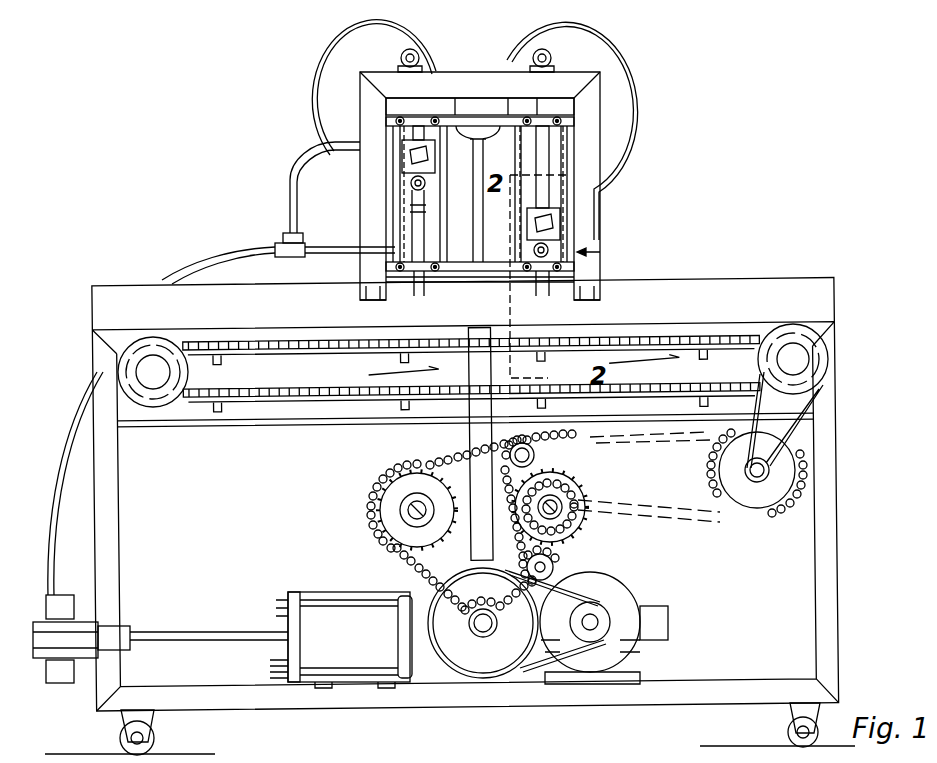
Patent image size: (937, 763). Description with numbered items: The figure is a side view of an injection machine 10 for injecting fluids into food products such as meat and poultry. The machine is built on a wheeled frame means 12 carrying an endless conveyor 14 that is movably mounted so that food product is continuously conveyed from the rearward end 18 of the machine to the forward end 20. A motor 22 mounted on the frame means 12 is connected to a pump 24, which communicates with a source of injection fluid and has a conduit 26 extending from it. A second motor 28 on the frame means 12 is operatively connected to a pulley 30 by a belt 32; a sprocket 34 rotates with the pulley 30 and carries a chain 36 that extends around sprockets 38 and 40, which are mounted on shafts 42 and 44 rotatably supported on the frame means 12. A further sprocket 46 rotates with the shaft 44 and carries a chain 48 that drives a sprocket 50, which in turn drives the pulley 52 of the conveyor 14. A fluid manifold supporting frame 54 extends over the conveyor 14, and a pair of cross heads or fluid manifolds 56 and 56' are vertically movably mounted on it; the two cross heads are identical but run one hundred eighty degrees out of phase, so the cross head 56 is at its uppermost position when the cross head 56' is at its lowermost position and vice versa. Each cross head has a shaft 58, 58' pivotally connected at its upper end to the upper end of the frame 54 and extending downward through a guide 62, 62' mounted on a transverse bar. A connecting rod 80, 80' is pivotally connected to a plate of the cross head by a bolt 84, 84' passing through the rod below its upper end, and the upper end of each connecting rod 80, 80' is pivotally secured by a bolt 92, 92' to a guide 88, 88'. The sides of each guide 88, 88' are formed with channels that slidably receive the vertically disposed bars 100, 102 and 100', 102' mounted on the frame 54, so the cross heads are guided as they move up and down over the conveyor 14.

The injection machine 10 is at (697, 155).
The wheeled frame means 12 is at (92, 514).
The endless conveyor 14 is at (460, 349).
The rearward end 18 is at (95, 370).
The forward end 20 is at (830, 350).
The motor 22 is at (350, 590).
The pump 24 is at (46, 607).
The conduit 26 is at (75, 385).
The motor 28 is at (610, 572).
The pulley 30 is at (508, 677).
The belt 32 is at (540, 683).
The sprocket 34 is at (470, 585).
The chain 36 is at (410, 555).
The sprocket 38 is at (395, 527).
The sprocket 40 is at (570, 462).
The shaft 42 is at (410, 520).
The shaft 44 is at (560, 510).
The sprocket 46 is at (570, 530).
The chain 48 is at (560, 437).
The sprocket 50 is at (800, 470).
The pulley 52 is at (815, 375).
The fluid manifold supporting frame 54 is at (501, 55).
The cross head 56 is at (599, 211).
The cross head 56' is at (381, 211).
The shaft 58 is at (592, 131).
The shaft 58' is at (363, 87).
The guide 62 is at (587, 133).
The guide 62' is at (358, 87).
The connecting rod 80 is at (616, 279).
The connecting rod 80' is at (361, 286).
The bolt 84 is at (603, 232).
The bolt 84' is at (382, 219).
The guide 88 is at (600, 205).
The guide 88' is at (374, 158).
The bolt 92 is at (597, 174).
The bolt 92' is at (375, 159).
The vertically disposed bar 100 is at (555, 153).
The vertically disposed bar 100' is at (281, 213).
The vertically disposed bar 102 is at (602, 169).
The vertically disposed bar 102' is at (442, 194).